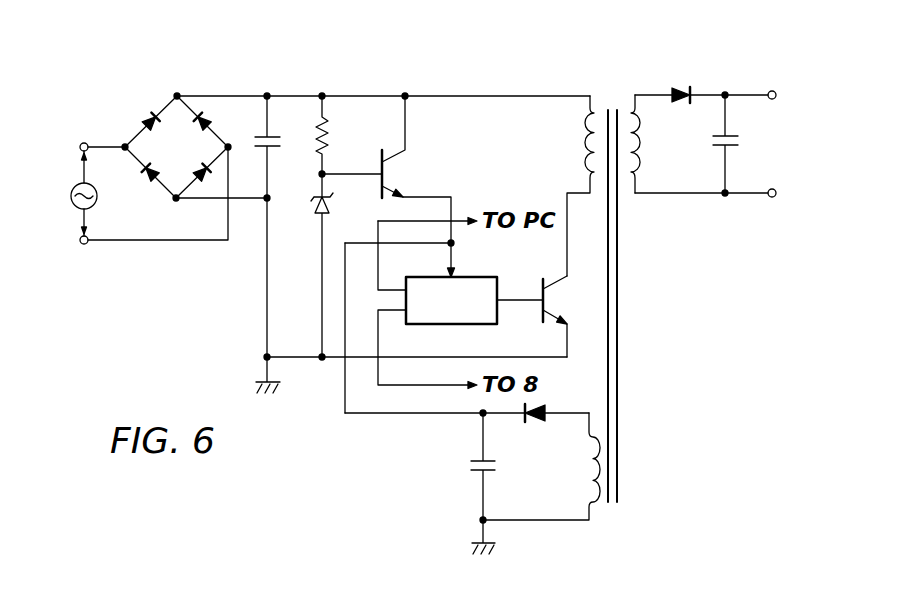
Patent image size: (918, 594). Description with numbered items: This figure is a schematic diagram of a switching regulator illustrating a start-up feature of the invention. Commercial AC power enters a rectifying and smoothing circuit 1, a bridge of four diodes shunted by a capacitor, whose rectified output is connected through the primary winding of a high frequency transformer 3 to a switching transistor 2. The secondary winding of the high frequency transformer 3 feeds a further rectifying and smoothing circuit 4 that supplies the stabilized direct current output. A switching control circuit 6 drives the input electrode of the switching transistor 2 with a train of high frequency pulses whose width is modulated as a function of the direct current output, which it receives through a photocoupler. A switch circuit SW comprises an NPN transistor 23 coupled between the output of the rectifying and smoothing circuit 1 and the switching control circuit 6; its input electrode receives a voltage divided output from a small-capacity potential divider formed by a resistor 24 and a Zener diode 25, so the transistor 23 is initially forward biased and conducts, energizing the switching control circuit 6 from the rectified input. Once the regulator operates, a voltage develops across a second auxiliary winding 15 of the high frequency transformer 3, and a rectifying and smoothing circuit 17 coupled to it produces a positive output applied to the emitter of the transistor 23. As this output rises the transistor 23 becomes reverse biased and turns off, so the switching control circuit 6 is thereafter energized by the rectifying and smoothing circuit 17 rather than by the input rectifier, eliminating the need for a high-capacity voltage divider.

The rectifying and smoothing circuit 1 is at (170, 101).
The switching transistor 2 is at (560, 303).
The high frequency transformer 3 is at (615, 93).
The rectifying and smoothing circuit 4 is at (714, 100).
The switching control circuit 6 is at (489, 277).
The second auxiliary winding 15 is at (598, 500).
The rectifying and smoothing circuit 17 is at (470, 463).
The transistor 23 is at (408, 173).
The resistor 24 is at (331, 121).
The Zener diode 25 is at (318, 221).
The switch circuit SW is at (443, 186).